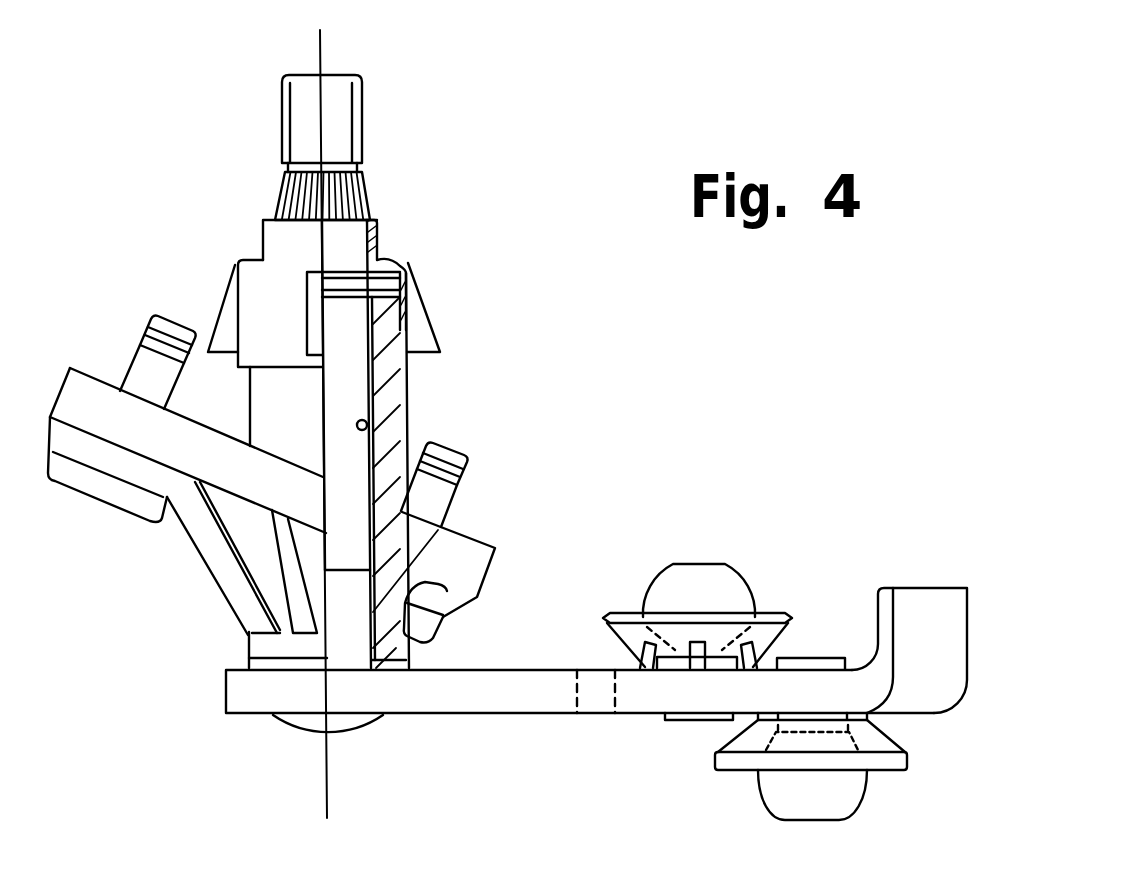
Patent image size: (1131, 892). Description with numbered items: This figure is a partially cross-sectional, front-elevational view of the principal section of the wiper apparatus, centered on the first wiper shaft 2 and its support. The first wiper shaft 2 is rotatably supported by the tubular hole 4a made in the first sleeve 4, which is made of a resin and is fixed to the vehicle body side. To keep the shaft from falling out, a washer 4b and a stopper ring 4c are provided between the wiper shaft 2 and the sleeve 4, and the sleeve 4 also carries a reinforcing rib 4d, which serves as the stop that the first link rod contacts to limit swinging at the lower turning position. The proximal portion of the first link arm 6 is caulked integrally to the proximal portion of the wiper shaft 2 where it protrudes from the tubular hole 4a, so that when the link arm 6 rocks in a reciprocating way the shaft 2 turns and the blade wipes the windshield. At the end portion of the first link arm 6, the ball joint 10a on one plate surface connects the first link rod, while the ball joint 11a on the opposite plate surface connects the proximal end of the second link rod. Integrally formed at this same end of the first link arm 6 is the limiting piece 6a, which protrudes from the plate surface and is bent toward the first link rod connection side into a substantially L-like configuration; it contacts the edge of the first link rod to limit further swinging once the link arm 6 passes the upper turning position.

The first wiper shaft 2 is at (357, 103).
The first sleeve 4 is at (385, 398).
The tubular hole 4a is at (370, 428).
The washer 4b is at (407, 262).
The stopper ring 4c is at (380, 262).
The reinforcing rib 4d is at (245, 548).
The first link arm 6 is at (488, 695).
The limiting piece 6a is at (928, 637).
The ball joint 10a is at (708, 580).
The ball joint 11a is at (840, 797).